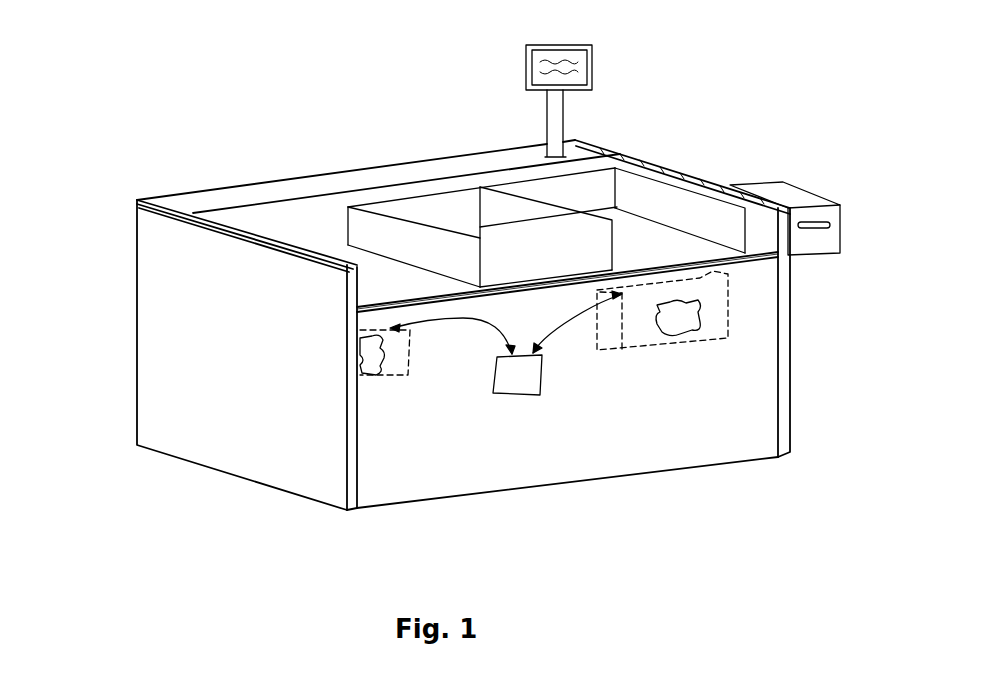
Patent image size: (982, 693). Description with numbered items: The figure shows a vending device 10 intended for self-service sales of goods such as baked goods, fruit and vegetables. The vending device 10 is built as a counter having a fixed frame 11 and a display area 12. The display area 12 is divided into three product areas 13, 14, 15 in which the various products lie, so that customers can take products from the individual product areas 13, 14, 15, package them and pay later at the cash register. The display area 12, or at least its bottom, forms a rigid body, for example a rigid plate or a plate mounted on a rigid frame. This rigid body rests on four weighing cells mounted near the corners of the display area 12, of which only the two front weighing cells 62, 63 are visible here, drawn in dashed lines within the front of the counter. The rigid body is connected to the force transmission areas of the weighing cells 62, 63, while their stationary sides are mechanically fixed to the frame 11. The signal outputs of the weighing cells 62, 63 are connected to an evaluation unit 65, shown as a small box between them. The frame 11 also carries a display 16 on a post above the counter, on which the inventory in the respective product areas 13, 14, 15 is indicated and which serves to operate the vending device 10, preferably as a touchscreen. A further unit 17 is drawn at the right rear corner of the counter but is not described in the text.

The vending device 10 is at (180, 152).
The frame 11 is at (390, 172).
The display area 12 is at (312, 222).
The product area 13 is at (413, 287).
The product area 14 is at (520, 268).
The product area 15 is at (652, 233).
The display 16 is at (592, 58).
The reader / control unit 17 is at (807, 190).
The weighing cell 62 is at (715, 317).
The weighing cell 63 is at (398, 360).
The evaluation unit 65 is at (517, 380).